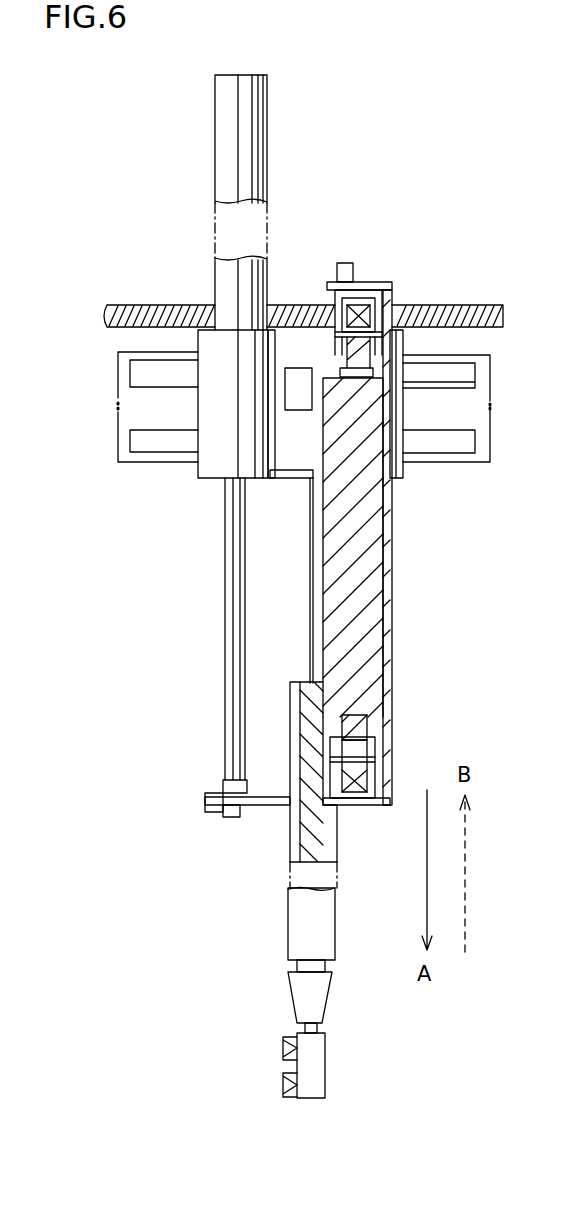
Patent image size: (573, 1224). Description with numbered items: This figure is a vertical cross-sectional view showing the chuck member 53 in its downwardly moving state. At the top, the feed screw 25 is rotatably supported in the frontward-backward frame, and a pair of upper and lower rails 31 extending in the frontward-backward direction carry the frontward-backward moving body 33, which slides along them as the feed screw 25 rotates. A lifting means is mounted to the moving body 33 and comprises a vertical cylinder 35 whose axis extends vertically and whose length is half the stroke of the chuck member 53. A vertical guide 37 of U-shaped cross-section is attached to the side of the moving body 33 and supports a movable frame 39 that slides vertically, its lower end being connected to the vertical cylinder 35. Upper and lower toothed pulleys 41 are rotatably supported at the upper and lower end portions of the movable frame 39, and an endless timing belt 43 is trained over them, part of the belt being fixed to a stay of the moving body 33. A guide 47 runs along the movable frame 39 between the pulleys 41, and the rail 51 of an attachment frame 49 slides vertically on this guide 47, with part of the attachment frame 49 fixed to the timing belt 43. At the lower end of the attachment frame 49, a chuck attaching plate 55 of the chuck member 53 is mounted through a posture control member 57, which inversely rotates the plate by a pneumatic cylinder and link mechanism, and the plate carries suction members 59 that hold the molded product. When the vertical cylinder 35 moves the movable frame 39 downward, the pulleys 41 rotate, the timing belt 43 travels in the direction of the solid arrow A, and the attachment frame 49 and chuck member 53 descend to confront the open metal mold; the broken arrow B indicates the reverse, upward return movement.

The feed screw 25 is at (470, 306).
The rails 31 is at (182, 438).
The frontward-backward moving body 33 is at (302, 470).
The vertical cylinder 35 is at (233, 186).
The vertical guide 37 is at (397, 465).
The movable frame 39 is at (388, 576).
The toothed pulleys 41 is at (357, 320).
The timing belt 43 is at (360, 722).
The guide 47 is at (353, 624).
The attachment frame 49 is at (297, 838).
The rail 51 is at (308, 707).
The chuck member 53 is at (309, 1057).
The chuck attaching plate 55 is at (312, 1075).
The posture control member 57 is at (305, 983).
The suction members 59 is at (283, 1082).